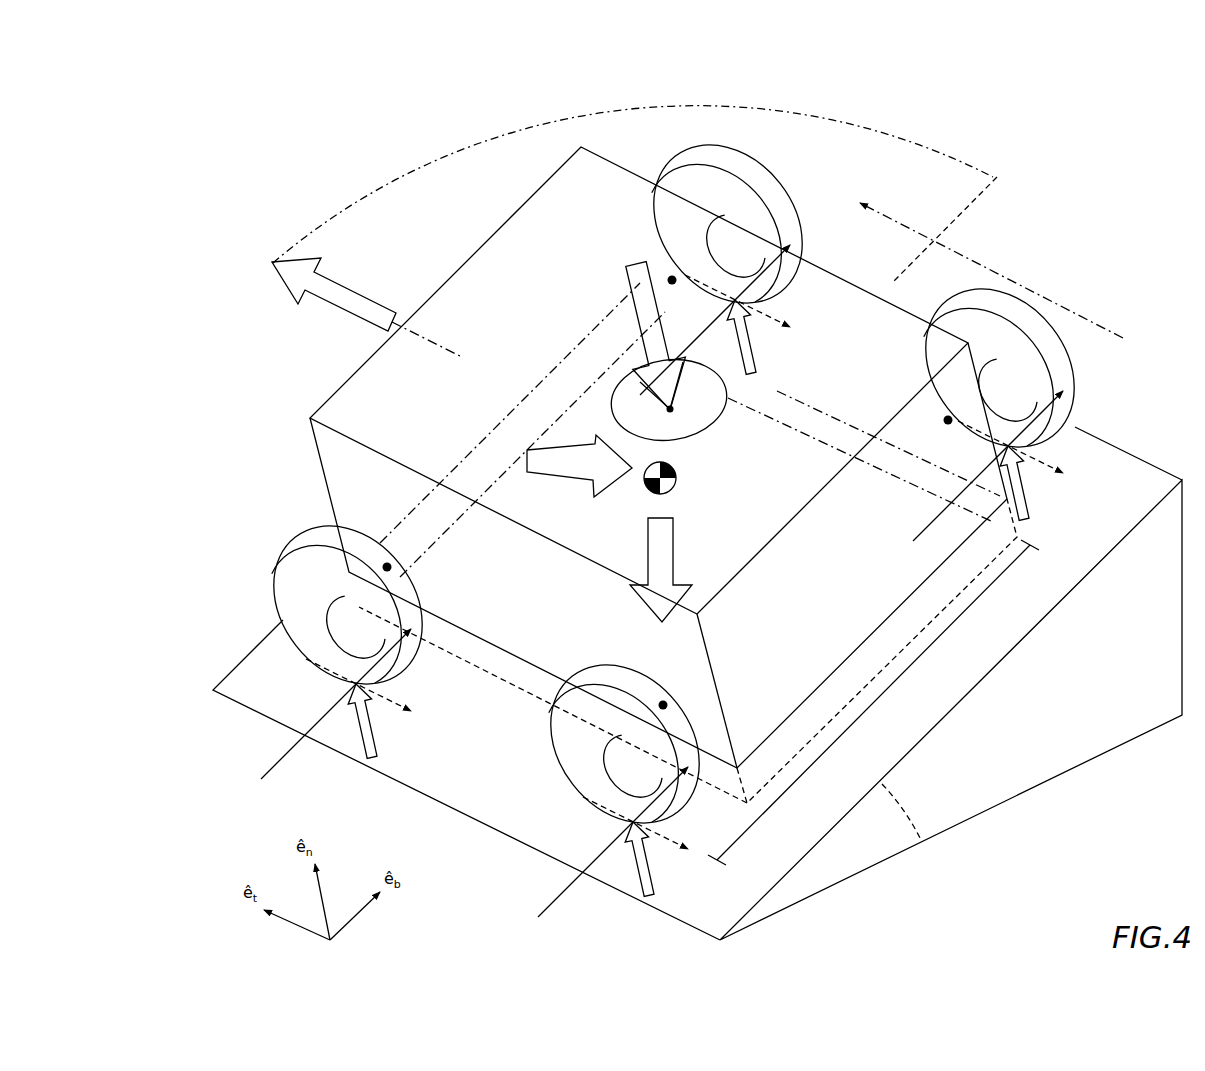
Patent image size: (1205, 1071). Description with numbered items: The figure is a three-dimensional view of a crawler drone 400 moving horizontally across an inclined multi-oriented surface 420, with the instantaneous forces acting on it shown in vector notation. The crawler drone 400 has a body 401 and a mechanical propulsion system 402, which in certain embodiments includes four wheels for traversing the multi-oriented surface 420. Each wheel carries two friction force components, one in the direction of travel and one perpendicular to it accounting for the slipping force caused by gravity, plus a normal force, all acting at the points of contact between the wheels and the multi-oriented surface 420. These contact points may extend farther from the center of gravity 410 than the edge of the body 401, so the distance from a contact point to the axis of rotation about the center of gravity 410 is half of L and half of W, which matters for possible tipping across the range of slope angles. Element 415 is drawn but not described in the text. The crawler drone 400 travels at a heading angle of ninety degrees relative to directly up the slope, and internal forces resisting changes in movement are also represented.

The crawler drone 400 is at (660, 482).
The body 401 is at (483, 300).
The mechanical propulsion system 402 is at (741, 152).
The center of gravity 410 is at (640, 500).
The tether attachment point 415 is at (690, 417).
The multi-oriented surface 420 is at (910, 728).